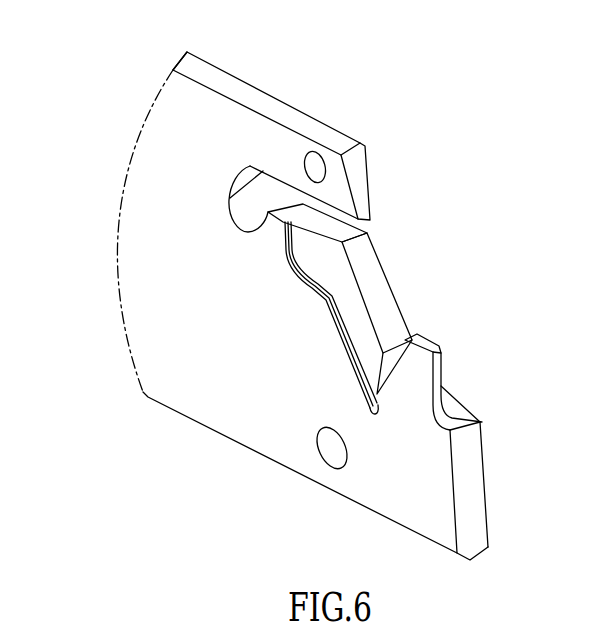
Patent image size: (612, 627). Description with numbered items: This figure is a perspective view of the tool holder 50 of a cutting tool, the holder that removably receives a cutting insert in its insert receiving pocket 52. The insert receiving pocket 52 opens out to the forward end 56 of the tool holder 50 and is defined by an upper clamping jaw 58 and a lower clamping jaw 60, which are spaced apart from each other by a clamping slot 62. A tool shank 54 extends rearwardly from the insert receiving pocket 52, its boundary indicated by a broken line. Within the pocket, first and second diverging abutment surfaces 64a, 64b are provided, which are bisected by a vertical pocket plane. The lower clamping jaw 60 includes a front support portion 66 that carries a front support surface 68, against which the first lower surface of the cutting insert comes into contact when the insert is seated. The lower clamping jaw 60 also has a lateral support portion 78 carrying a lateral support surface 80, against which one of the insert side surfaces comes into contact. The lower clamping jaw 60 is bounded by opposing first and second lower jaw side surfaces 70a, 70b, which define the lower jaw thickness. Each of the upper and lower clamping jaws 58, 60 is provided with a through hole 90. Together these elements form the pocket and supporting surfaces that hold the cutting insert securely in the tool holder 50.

The tool holder 50 is at (495, 213).
The insert receiving pocket 52 is at (398, 303).
The tool shank 54 is at (168, 257).
The forward end 56 is at (467, 457).
The upper clamping jaw 58 is at (265, 143).
The lower clamping jaw 60 is at (265, 405).
The clamping slot 62 is at (277, 193).
The first abutment surface 64a is at (375, 405).
The second abutment surface 64b is at (350, 368).
The front support portion 66 is at (412, 375).
The front support surface 68 is at (428, 338).
The first lower jaw side surface 70a is at (362, 472).
The second lower jaw side surface 70b is at (487, 443).
The lateral support portion 78 is at (357, 258).
The lateral support surface 80 is at (347, 303).
The through hole 90 is at (313, 163).